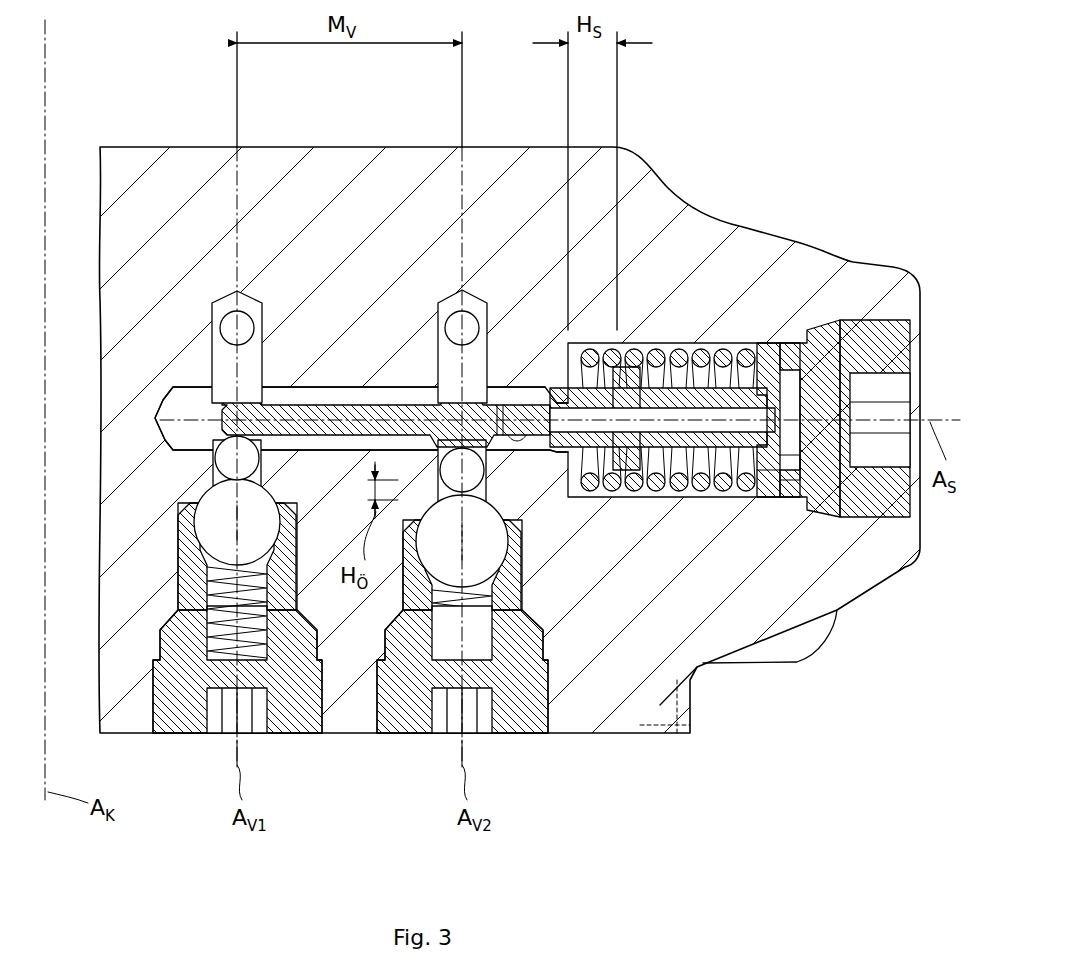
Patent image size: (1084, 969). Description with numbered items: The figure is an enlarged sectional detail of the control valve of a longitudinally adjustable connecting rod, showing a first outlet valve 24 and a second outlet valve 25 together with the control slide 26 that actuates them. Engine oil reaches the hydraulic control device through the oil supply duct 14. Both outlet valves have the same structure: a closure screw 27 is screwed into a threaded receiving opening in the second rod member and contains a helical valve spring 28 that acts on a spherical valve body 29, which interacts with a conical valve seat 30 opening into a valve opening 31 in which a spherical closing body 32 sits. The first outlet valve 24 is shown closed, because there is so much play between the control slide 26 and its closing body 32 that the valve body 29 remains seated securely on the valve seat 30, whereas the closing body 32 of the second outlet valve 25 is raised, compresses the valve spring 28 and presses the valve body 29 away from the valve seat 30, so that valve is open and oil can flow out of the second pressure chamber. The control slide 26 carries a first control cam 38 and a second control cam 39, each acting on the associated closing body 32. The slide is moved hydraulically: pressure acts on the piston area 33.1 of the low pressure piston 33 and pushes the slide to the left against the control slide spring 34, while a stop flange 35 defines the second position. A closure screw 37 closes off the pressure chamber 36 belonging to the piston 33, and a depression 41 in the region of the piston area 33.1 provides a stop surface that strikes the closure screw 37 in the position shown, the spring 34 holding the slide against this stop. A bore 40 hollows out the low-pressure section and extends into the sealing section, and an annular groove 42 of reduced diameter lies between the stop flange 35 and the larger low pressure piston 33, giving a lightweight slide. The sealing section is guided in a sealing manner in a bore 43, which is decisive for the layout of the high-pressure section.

The oil supply duct 14 is at (219, 328).
The first outlet valve 24 is at (155, 603).
The second outlet valve 25 is at (535, 592).
The control slide 26 is at (549, 385).
The closure screw 27 is at (174, 738).
The valve spring 28 is at (180, 588).
The valve body 29 is at (205, 522).
The valve seat 30 is at (212, 496).
The valve opening 31 is at (258, 476).
The closing body 32 is at (216, 462).
The low pressure piston 33 is at (772, 343).
The piston area 33.1 is at (810, 500).
The control slide spring 34 is at (690, 395).
The stop flange 35 is at (624, 378).
The pressure chamber 36 is at (806, 343).
The closure screw 37 is at (862, 322).
The control cam 38 is at (272, 398).
The control cam 39 is at (492, 395).
The bore 40 is at (683, 445).
The depression 41 is at (792, 475).
The annular groove 42 is at (730, 348).
The bore 43 is at (505, 395).